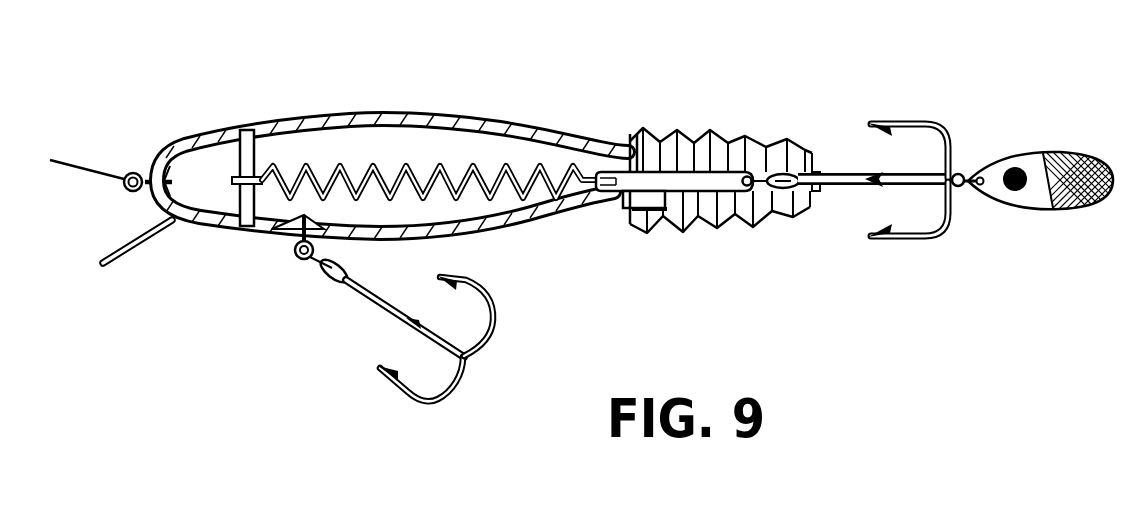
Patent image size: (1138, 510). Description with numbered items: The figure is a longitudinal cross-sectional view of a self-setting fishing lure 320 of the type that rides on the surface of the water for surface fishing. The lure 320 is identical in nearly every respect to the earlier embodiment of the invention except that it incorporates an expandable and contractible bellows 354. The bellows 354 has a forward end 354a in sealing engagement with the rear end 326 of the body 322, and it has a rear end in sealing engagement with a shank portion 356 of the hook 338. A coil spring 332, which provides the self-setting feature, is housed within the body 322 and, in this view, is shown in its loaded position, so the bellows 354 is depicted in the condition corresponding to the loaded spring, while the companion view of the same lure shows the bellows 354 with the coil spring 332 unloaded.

The self-setting fishing lure 320 is at (594, 215).
The body 322 is at (479, 122).
The rear end of the body 326 is at (618, 209).
The coil spring 332 is at (379, 156).
The hook 338 is at (924, 120).
The bellows 354 is at (719, 168).
The forward end of the bellows 354a is at (633, 132).
The shank portion of the hook 356 is at (855, 195).